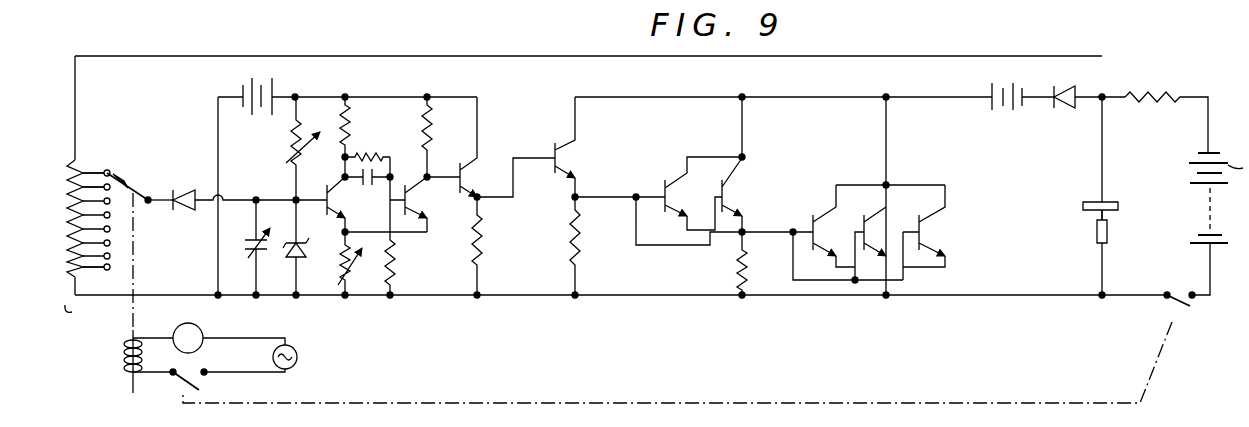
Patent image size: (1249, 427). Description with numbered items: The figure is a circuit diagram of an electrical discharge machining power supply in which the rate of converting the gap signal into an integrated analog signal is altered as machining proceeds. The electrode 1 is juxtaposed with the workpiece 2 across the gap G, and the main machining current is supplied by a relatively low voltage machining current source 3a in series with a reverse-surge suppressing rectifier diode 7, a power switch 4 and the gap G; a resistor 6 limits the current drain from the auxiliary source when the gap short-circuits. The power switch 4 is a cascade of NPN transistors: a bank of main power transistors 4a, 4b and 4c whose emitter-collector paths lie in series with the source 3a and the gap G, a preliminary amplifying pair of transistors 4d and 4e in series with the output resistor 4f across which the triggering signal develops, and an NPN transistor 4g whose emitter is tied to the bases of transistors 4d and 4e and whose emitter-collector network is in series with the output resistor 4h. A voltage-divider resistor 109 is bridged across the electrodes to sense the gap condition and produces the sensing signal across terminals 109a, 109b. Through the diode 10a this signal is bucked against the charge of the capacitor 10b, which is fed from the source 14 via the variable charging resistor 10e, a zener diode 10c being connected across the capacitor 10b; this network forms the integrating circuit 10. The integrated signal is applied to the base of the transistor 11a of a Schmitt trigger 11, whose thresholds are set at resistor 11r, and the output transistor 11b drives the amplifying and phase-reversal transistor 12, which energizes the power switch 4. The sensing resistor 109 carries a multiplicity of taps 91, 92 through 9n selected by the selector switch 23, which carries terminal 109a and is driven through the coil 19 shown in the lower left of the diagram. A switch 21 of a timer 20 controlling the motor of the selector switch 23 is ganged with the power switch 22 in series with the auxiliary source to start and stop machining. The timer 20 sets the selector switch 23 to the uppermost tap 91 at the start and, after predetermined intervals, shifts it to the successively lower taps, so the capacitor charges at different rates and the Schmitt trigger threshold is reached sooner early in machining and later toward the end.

The uppermost tap 91 is at (71, 163).
The tap 92 is at (71, 187).
The tap 9n is at (74, 270).
The voltage-divider resistor 109 is at (50, 197).
The output terminal 109a is at (149, 204).
The terminal 109b is at (69, 324).
The selector switch 23 is at (127, 187).
The integrating circuit 10 is at (289, 262).
The diode 10a is at (214, 185).
The capacitor 10b is at (250, 247).
The zener diode 10c is at (291, 257).
The variable charging resistor 10e is at (286, 148).
The source 14 is at (253, 80).
The Schmitt trigger 11 is at (384, 242).
The transistor 11a is at (326, 186).
The output transistor 11b is at (403, 204).
The resistor 11r is at (340, 277).
The amplifying and phase-reversal transistor 12 is at (458, 184).
The power switch 4 is at (898, 170).
The main power transistor 4a is at (812, 218).
The main power transistor 4b is at (863, 215).
The main power transistor 4c is at (918, 215).
The transistor 4d is at (664, 212).
The transistor 4e is at (722, 178).
The output resistor 4f is at (738, 270).
The NPN transistor 4g is at (554, 150).
The output resistor 4h is at (571, 233).
The machining current source 3a is at (1004, 106).
The reverse-surge suppressing rectifier diode 7 is at (1068, 108).
The resistor 6 is at (1152, 93).
The workpiece 2 is at (1113, 205).
The electrode 1 is at (1108, 232).
The gap G is at (1077, 222).
The power switch 22 is at (1180, 305).
The relay coil 19 is at (122, 358).
The timer 20 is at (298, 362).
The switch 21 is at (180, 382).